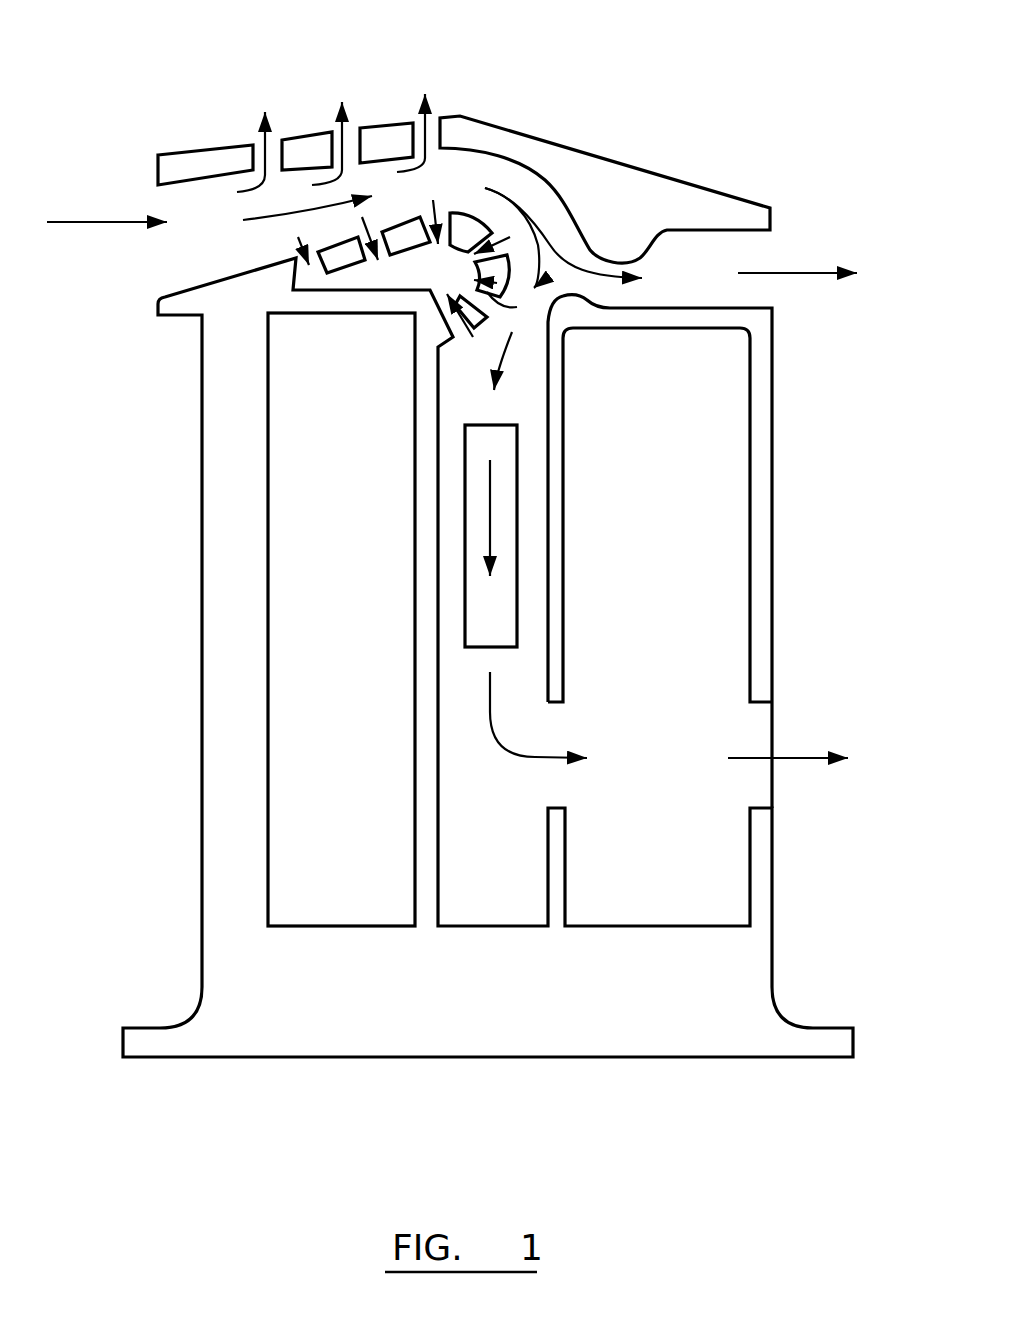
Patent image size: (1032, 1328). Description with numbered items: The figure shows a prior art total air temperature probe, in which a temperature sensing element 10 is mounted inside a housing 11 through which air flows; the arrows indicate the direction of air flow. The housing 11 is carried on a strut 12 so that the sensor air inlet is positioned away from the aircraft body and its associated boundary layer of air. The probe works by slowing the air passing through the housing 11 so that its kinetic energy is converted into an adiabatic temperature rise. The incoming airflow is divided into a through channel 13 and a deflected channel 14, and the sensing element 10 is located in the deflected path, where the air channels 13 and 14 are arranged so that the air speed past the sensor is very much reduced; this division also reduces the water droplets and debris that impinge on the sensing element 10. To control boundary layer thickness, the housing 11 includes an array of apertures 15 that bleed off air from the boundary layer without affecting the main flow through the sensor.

The temperature sensing element 10 is at (463, 537).
The housing 11 is at (592, 177).
The strut 12 is at (202, 753).
The through channel 13 is at (767, 253).
The deflected channel 14 is at (507, 365).
The apertures 15 is at (257, 137).